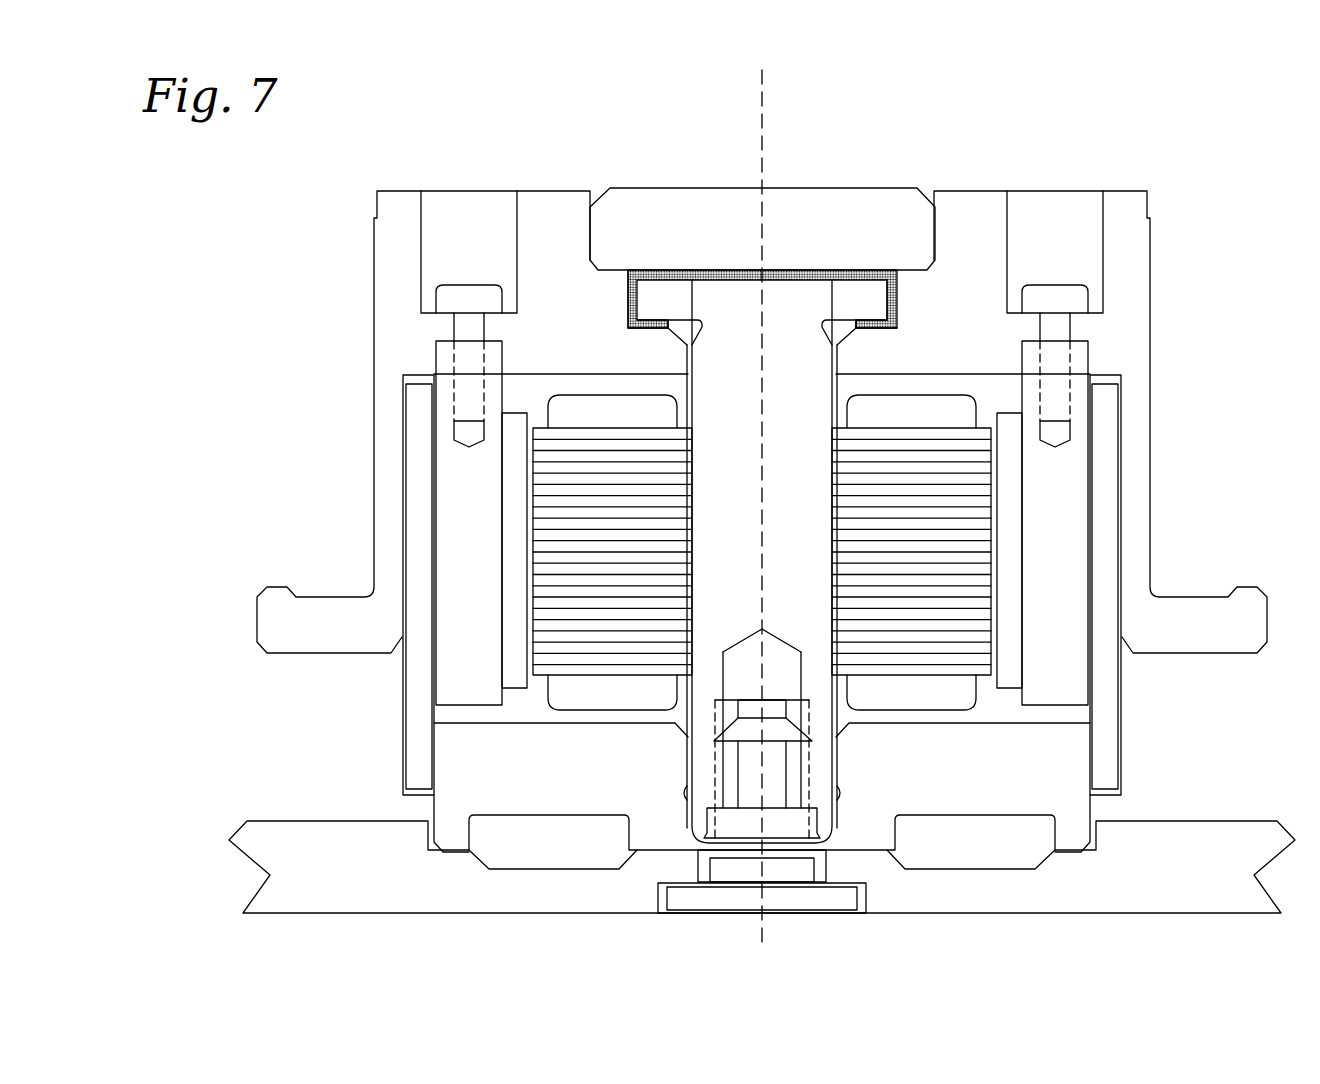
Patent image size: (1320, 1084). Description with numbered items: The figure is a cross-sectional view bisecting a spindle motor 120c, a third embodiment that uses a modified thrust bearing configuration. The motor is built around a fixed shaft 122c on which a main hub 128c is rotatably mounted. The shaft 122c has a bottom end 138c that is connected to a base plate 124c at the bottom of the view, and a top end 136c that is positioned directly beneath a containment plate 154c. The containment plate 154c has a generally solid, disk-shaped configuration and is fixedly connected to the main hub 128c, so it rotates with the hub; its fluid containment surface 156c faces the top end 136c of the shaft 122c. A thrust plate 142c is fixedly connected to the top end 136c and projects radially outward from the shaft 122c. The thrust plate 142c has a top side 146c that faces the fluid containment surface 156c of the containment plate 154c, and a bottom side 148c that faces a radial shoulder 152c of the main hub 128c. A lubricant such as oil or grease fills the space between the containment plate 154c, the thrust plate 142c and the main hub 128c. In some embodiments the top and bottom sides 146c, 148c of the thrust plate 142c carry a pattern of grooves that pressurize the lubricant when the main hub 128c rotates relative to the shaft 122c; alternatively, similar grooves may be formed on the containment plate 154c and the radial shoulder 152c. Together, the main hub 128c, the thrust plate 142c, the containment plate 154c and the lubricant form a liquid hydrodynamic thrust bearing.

The spindle motor 120c is at (218, 398).
The fixed shaft 122c is at (842, 385).
The base plate 124c is at (933, 913).
The main hub 128c is at (375, 335).
The top end of the shaft 136c is at (797, 285).
The bottom end of the shaft 138c is at (833, 818).
The thrust plate 142c is at (850, 303).
The top side of the thrust plate 146c is at (868, 268).
The bottom side of the thrust plate 148c is at (865, 330).
The radial shoulder 152c is at (877, 318).
The containment plate 154c is at (876, 187).
The fluid containment surface 156c is at (643, 270).